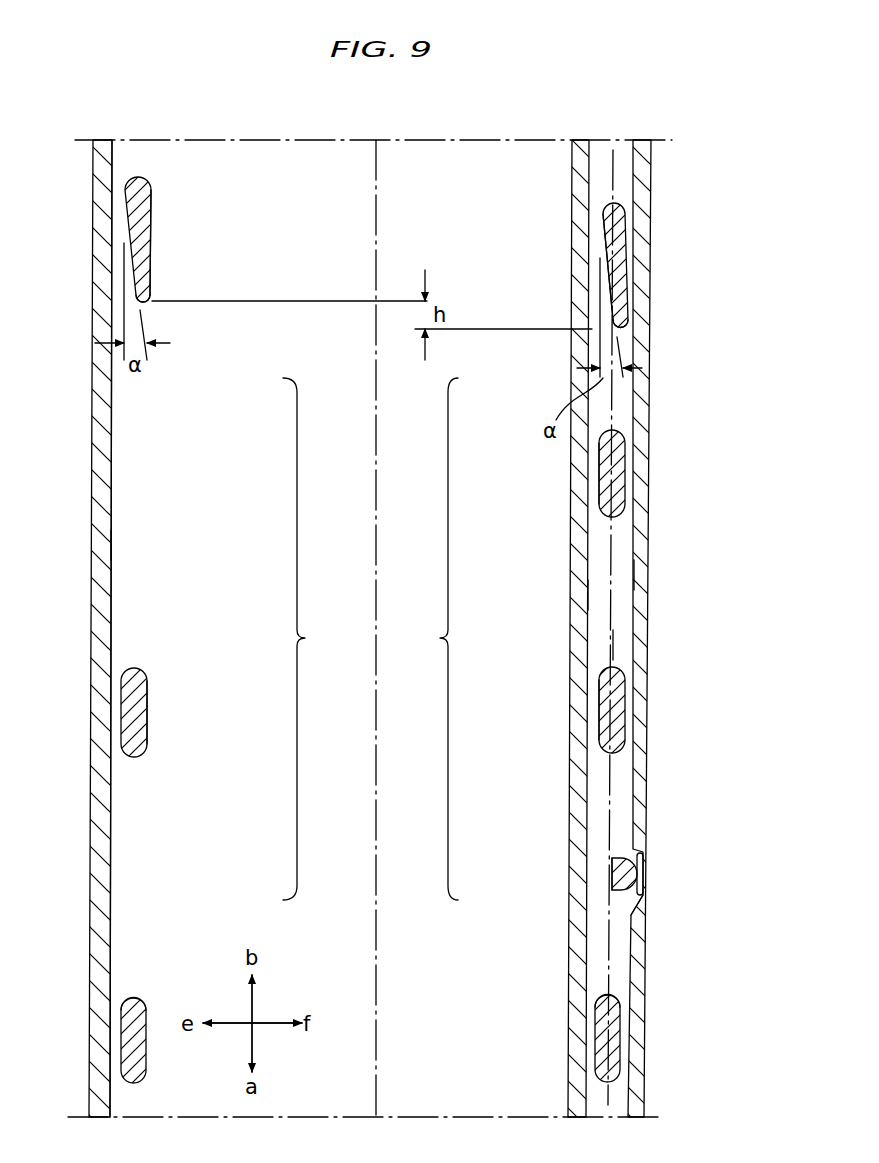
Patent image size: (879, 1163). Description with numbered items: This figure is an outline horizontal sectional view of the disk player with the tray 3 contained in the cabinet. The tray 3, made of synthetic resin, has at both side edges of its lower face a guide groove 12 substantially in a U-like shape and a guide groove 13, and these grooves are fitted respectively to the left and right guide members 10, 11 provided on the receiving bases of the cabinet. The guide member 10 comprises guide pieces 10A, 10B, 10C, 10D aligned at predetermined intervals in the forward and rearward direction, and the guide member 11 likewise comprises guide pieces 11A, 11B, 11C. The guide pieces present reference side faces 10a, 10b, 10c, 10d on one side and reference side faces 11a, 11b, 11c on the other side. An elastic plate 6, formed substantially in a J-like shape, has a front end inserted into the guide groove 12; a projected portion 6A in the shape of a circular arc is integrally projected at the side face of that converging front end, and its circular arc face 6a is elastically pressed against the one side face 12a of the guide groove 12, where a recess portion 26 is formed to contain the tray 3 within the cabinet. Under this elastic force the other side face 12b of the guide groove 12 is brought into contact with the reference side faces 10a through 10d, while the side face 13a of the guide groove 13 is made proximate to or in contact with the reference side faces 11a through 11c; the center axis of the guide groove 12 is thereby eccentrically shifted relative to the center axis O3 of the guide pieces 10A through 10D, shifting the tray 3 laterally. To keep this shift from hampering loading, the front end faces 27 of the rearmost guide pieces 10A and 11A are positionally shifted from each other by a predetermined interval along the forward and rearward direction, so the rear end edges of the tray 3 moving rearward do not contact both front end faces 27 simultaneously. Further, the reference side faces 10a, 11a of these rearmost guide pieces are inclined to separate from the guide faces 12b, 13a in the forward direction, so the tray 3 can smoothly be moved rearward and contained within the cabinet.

The tray 3 is at (93, 868).
The guide groove 13 is at (116, 509).
The side face of the guide groove 13a is at (112, 542).
The guide member 11 is at (311, 639).
The reference side face 11a is at (132, 268).
The reference side face 11b is at (121, 722).
The reference side face 11c is at (121, 1053).
The guide piece 11A is at (151, 227).
The guide piece 11B is at (147, 735).
The guide piece 11C is at (141, 996).
The front end face 27 is at (142, 308).
The guide groove 12 is at (622, 540).
The one side face of the guide groove 12a is at (630, 572).
The other side face of the guide groove 12b is at (588, 593).
The center axis of the guide pieces O3 is at (613, 645).
The guide member 10 is at (428, 639).
The reference side face 10a is at (610, 300).
The reference side face 10b is at (596, 486).
The reference side face 10c is at (596, 716).
The reference side face 10d is at (592, 1053).
The guide piece 10A is at (603, 224).
The guide piece 10B is at (600, 500).
The guide piece 10C is at (600, 735).
The guide piece 10D is at (605, 994).
The elastic plate 6 is at (625, 855).
The circular arc face 6a is at (637, 875).
The projected portion 6A is at (640, 905).
The recess portion 26 is at (641, 856).